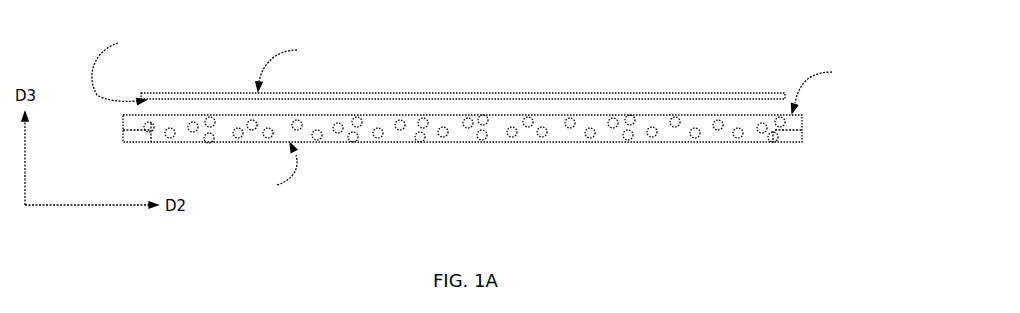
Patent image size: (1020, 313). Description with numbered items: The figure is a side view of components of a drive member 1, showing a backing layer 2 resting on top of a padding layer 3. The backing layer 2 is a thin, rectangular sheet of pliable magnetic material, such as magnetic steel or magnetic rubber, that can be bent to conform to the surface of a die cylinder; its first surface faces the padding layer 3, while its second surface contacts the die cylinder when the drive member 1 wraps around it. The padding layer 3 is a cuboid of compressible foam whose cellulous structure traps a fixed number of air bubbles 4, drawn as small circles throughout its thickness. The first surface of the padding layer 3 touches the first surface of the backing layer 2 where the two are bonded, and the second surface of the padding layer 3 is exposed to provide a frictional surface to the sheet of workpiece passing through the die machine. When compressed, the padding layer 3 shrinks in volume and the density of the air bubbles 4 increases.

The drive member 1 is at (720, 44).
The backing layer 2 is at (781, 84).
The padding layer 3 is at (774, 149).
The air bubbles 4 is at (638, 140).